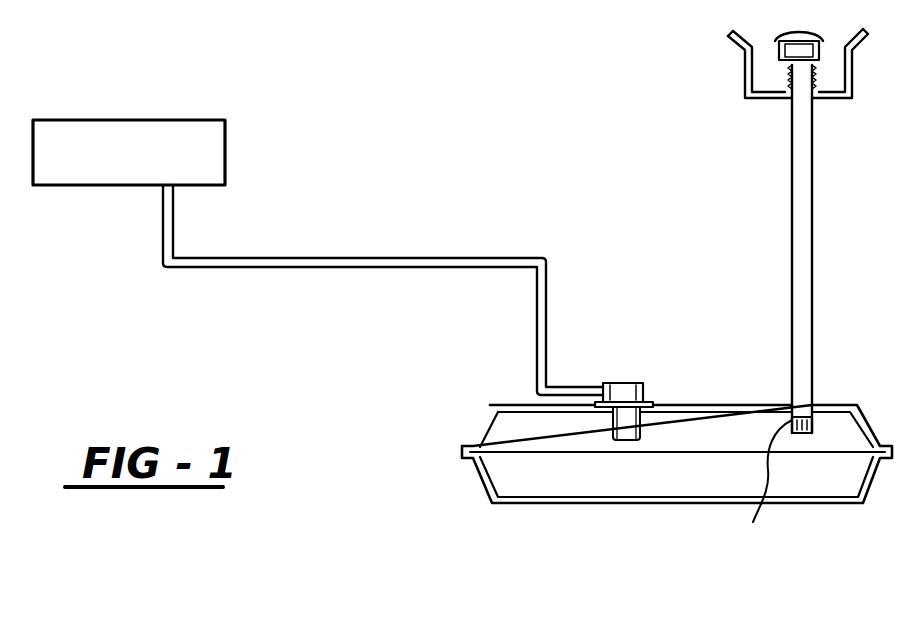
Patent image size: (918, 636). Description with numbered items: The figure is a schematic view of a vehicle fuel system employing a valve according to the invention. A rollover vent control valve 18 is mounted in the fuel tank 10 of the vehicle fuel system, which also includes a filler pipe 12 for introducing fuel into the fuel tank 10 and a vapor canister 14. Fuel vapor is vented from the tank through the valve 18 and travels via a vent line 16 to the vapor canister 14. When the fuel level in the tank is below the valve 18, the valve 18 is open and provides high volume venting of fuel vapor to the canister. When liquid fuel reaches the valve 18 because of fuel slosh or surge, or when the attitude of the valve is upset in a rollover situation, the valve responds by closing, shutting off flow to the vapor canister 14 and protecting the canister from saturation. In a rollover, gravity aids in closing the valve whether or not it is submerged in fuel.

The fuel tank 10 is at (483, 424).
The filler pipe 12 is at (791, 155).
The vapor canister 14 is at (225, 128).
The vent line 16 is at (547, 300).
The rollover vent control valve 18 is at (645, 383).